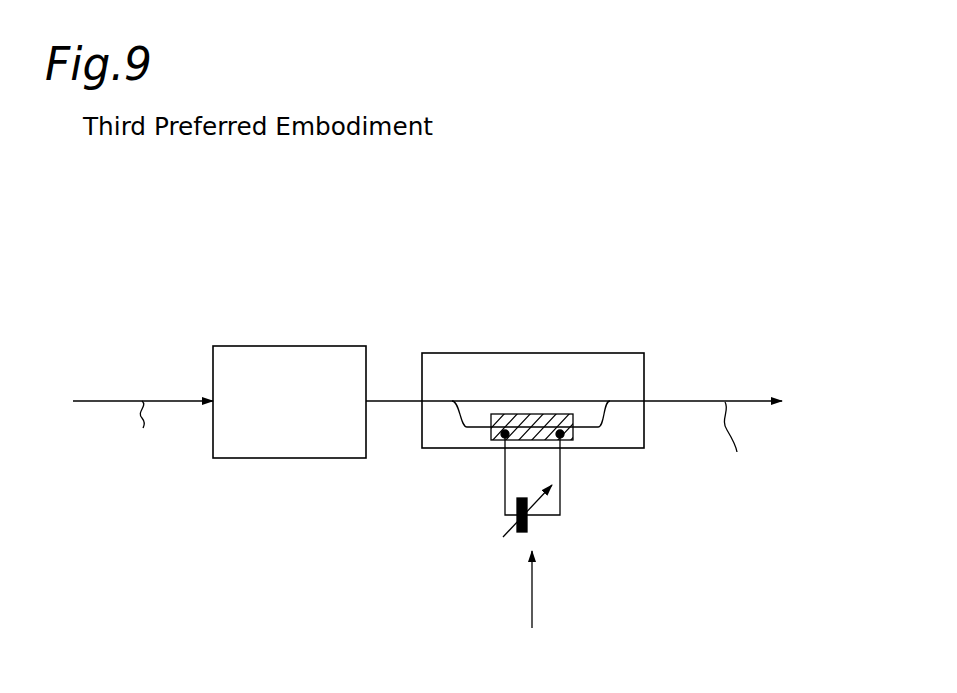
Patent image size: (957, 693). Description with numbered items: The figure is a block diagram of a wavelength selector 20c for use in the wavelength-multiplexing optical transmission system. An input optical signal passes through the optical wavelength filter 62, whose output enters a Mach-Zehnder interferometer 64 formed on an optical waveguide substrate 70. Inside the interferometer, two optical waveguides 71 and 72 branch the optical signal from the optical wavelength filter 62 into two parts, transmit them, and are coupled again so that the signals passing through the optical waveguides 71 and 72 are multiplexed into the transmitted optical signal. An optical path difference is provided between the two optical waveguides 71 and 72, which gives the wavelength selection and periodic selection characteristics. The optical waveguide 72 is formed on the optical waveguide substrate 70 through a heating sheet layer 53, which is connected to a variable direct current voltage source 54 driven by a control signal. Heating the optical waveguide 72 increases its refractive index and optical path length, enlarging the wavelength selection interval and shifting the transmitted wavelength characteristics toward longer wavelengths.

The wavelength selector 20c is at (525, 193).
The optical wavelength filter 62 is at (297, 346).
The Mach-Zehnder interferometer 64 is at (573, 352).
The optical waveguide substrate 70 is at (632, 373).
The optical waveguide 71 is at (488, 401).
The optical waveguide 72 is at (478, 430).
The heating sheet layer 53 is at (573, 423).
The variable direct current voltage source 54 is at (537, 535).